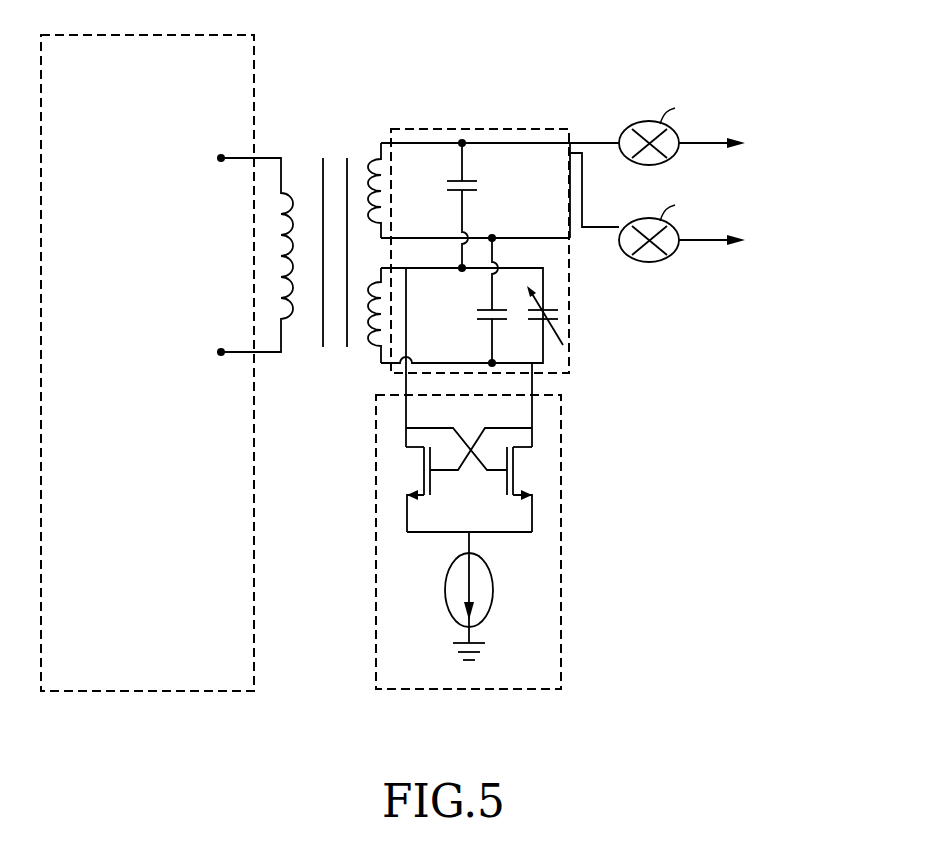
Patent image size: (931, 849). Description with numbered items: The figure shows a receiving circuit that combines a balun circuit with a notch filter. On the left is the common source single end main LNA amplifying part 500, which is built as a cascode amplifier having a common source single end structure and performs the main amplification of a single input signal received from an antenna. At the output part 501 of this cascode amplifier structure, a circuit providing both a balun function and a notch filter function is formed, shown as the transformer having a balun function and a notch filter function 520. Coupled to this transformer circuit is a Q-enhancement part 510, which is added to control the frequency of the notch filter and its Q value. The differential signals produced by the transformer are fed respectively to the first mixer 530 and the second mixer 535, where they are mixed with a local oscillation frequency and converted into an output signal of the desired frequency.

The common source single end main LNA amplifying part 500 is at (152, 35).
The output part 501 is at (270, 158).
The Q-enhancement part 510 is at (561, 543).
The transformer having a balun function and a notch filter function 520 is at (476, 129).
The first mixer 530 is at (742, 103).
The second mixer 535 is at (760, 208).